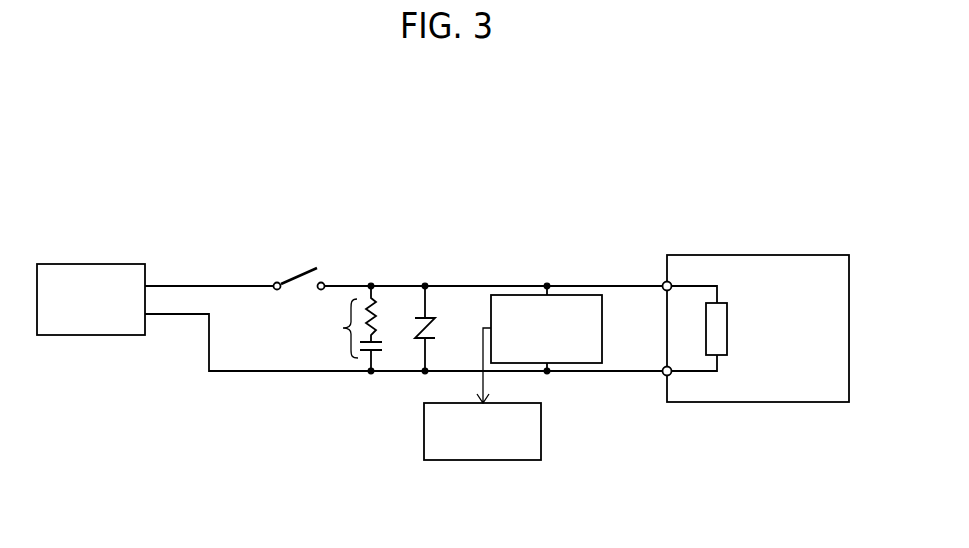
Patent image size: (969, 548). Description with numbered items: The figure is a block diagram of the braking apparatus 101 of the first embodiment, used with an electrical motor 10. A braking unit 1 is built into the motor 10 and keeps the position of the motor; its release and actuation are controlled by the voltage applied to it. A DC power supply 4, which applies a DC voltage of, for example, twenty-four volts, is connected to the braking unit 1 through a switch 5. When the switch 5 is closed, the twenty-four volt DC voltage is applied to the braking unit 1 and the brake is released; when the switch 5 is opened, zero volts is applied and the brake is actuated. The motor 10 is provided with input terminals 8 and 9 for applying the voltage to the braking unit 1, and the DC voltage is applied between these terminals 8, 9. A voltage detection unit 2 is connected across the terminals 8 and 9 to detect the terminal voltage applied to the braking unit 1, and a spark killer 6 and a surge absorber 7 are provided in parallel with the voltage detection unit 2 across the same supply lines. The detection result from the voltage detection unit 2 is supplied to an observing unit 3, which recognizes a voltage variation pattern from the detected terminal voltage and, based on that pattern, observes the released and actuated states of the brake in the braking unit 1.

The braking unit 1 is at (728, 353).
The voltage detection unit 2 is at (603, 321).
The observing unit 3 is at (424, 430).
The DC power supply 4 is at (87, 264).
The switch 5 is at (327, 272).
The spark killer 6 is at (343, 328).
The surge absorber 7 is at (438, 326).
The input terminal 8 is at (663, 284).
The input terminal 9 is at (665, 373).
The electrical motor 10 is at (823, 255).
The braking apparatus 101 is at (520, 210).